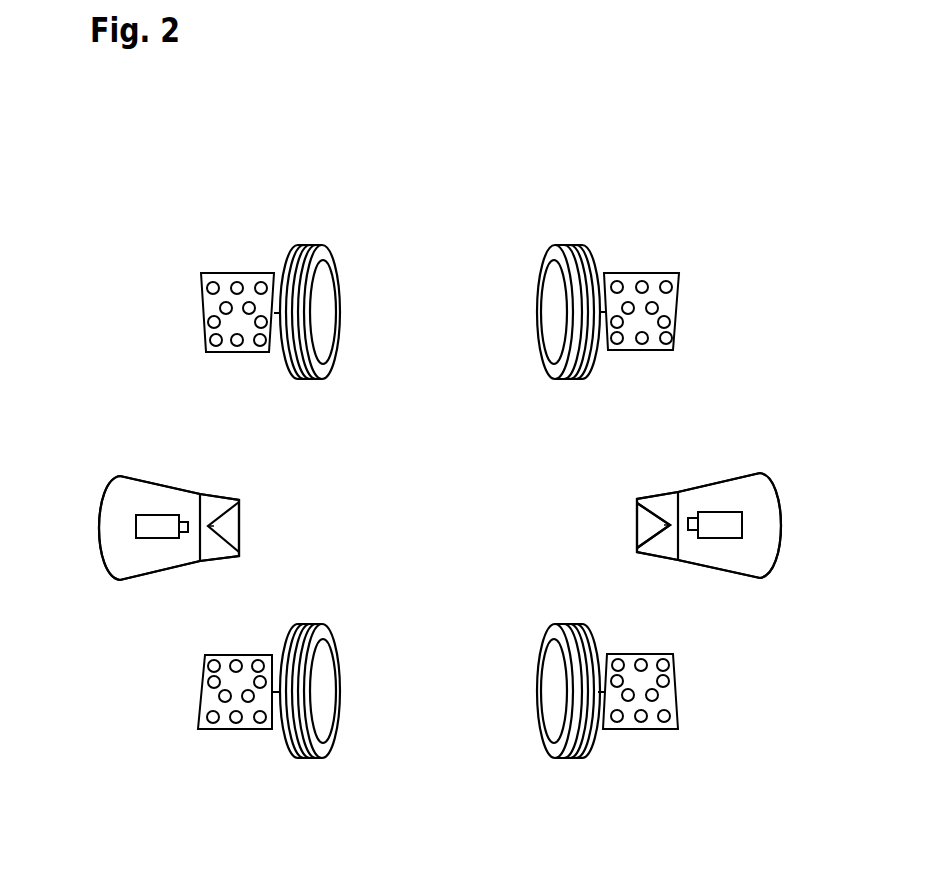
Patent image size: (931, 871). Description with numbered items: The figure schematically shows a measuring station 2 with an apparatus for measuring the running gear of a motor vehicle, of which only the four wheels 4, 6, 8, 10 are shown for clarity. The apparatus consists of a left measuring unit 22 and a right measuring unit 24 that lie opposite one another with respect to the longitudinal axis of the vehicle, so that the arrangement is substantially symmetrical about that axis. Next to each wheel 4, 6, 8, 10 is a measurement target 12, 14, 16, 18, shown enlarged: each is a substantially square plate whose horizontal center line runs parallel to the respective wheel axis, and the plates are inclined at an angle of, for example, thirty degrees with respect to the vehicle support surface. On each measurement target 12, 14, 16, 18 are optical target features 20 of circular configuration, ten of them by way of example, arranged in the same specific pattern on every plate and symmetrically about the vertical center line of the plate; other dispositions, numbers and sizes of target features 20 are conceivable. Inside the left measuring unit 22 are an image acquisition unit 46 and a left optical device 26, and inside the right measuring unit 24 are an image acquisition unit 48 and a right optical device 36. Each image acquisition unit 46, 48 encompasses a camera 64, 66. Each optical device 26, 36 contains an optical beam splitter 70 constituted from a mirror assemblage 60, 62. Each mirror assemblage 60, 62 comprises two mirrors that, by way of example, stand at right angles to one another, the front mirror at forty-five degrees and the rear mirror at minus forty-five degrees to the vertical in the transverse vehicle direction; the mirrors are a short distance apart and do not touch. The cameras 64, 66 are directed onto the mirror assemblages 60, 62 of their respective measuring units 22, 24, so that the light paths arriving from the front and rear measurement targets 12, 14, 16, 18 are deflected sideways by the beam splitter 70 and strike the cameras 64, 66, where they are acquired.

The measuring station 2 is at (722, 128).
The wheel 4 is at (308, 245).
The wheel 6 is at (305, 758).
The wheel 8 is at (565, 245).
The wheel 10 is at (563, 758).
The measurement target 12 is at (240, 273).
The measurement target 14 is at (237, 732).
The measurement target 16 is at (638, 273).
The measurement target 18 is at (637, 732).
The optical target feature 20 is at (214, 322).
The left measuring unit 22 is at (160, 476).
The right measuring unit 24 is at (720, 478).
The left optical device 26 is at (220, 502).
The right optical device 36 is at (662, 505).
The image acquisition unit 46 is at (178, 495).
The image acquisition unit 48 is at (752, 497).
The mirror assemblage 60 is at (239, 507).
The mirror assemblage 62 is at (637, 507).
The camera 64 is at (162, 532).
The camera 66 is at (718, 532).
The optical beam splitter 70 is at (226, 525).